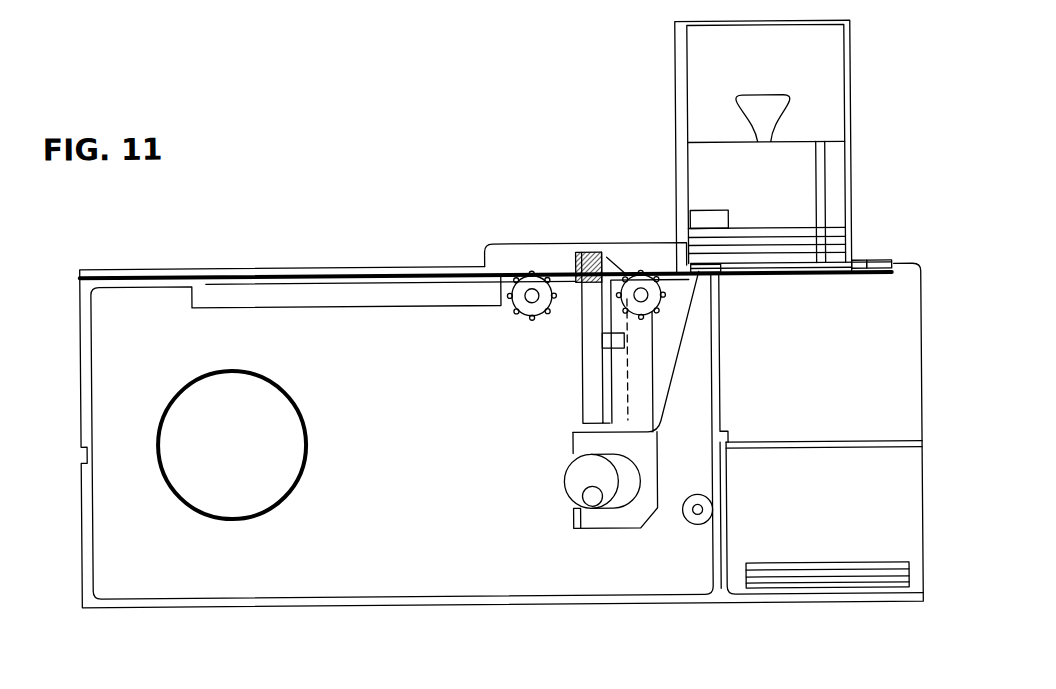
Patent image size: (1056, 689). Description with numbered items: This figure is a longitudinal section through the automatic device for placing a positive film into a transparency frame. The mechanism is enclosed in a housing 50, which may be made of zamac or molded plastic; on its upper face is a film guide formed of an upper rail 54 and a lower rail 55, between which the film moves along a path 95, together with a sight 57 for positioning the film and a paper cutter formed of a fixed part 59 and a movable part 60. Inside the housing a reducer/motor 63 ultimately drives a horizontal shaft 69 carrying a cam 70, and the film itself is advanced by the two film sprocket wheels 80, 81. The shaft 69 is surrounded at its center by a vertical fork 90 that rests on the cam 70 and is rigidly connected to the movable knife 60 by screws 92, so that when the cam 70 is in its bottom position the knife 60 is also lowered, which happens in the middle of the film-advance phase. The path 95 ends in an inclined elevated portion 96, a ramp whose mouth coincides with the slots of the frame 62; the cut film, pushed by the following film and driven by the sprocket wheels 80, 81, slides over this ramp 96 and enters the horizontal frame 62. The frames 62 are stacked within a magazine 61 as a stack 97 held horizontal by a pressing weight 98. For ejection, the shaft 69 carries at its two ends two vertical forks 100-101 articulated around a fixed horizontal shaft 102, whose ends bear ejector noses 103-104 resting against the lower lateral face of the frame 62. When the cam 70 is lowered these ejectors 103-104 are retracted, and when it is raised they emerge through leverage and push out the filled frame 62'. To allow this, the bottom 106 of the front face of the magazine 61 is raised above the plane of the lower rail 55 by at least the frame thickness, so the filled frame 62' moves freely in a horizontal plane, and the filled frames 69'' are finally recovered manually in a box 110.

The housing 50 is at (648, 605).
The upper rail 54 is at (640, 257).
The lower rail 55 is at (495, 280).
The sight 57 is at (279, 281).
The fixed part of paper cutter 59 is at (585, 256).
The movable part of paper cutter 60 is at (608, 258).
The magazine 61 is at (853, 108).
The frame 62 is at (826, 191).
The filled frame 62' is at (935, 239).
The reducer/motor 63 is at (206, 385).
The shaft 69 is at (592, 566).
The filled frames 69'' is at (876, 574).
The cam 70 is at (575, 474).
The film sprocket wheel 80 is at (480, 270).
The film sprocket wheel 81 is at (662, 276).
The vertical fork 90 is at (638, 511).
The screws 92 is at (625, 344).
The path 95 is at (500, 280).
The inclined elevated portion 96 is at (725, 279).
The stack 97 is at (837, 243).
The pressing weight 98 is at (736, 162).
The vertical forks 100-101 is at (683, 466).
The fixed horizontal shaft 102 is at (702, 525).
The ejector noses 103-104 is at (718, 272).
The bottom of front face of magazine 106 is at (850, 265).
The box 110 is at (888, 503).